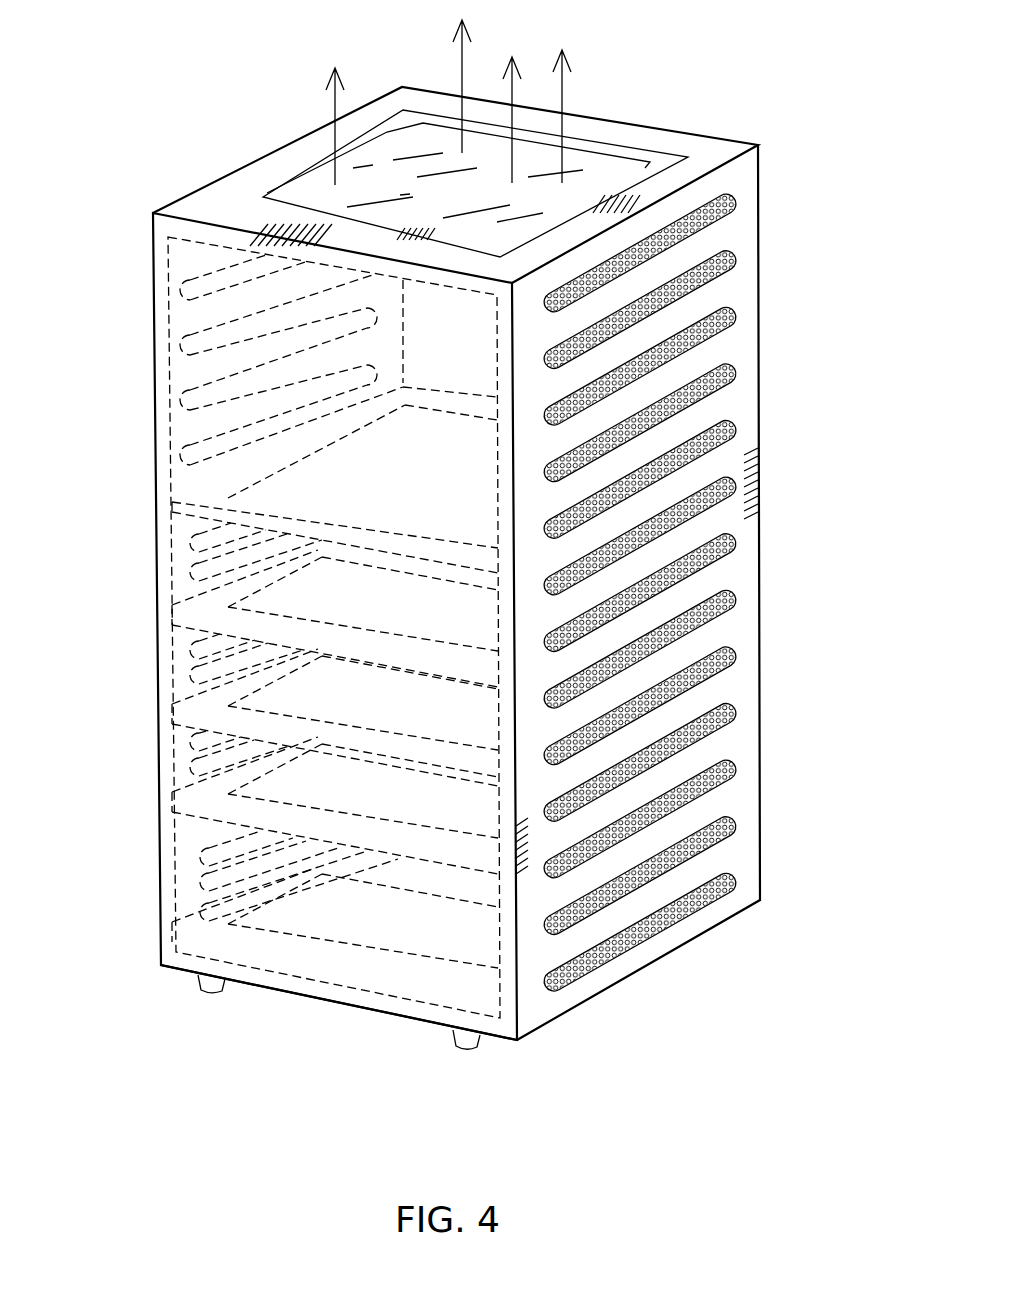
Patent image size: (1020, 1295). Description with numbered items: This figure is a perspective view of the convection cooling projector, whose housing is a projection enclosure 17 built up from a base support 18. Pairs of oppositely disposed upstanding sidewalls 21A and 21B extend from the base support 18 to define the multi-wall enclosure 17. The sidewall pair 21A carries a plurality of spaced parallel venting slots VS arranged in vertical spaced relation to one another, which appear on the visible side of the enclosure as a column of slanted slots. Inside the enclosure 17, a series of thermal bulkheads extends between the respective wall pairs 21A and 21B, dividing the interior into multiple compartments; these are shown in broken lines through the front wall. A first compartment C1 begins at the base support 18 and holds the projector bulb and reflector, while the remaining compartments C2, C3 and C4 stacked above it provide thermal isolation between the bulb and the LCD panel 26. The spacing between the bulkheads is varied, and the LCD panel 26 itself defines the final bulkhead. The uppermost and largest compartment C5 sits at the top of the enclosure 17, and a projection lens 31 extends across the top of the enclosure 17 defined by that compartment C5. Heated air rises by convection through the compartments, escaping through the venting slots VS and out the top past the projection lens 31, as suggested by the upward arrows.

The projection enclosure 17 is at (784, 308).
The base support 18 is at (386, 1020).
The upstanding sidewalls 21A is at (148, 308).
The upstanding sidewalls 21B is at (457, 367).
The LCD panel 26 is at (175, 548).
The projection lens 31 is at (607, 175).
The venting slots VS is at (735, 198).
The first compartment C1 is at (218, 931).
The compartment C2 is at (225, 800).
The compartment C3 is at (225, 712).
The compartment C4 is at (225, 612).
The largest compartment C5 is at (287, 492).